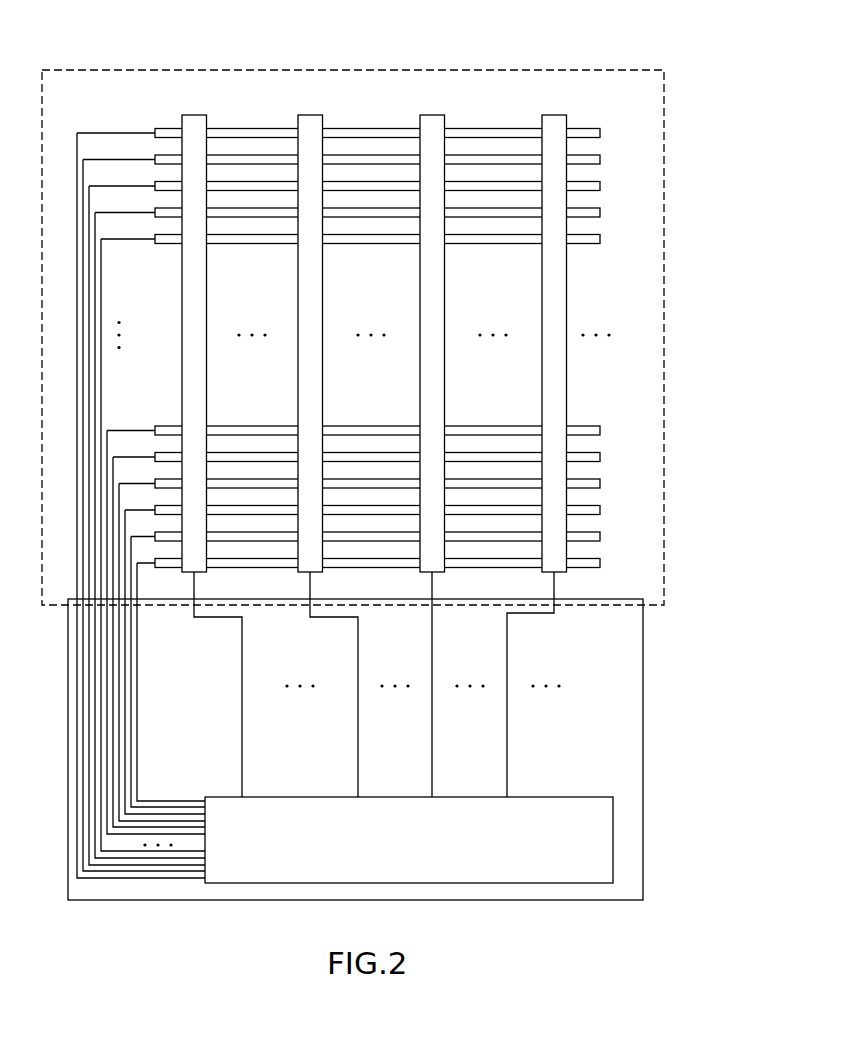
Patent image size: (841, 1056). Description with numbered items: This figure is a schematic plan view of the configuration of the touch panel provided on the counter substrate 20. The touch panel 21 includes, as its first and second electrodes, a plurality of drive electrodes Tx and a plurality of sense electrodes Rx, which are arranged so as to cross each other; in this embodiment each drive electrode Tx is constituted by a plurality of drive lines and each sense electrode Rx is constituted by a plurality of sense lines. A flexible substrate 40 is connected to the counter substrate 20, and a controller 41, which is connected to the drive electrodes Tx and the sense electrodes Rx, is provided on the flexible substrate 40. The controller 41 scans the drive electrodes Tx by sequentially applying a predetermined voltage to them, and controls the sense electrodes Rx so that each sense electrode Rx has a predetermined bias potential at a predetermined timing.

The counter substrate 20 is at (665, 302).
The touch panel 21 is at (581, 104).
The flexible substrate 40 is at (643, 672).
The controller 41 is at (613, 818).
The drive electrode Tx is at (587, 133).
The sense electrode Rx is at (450, 309).